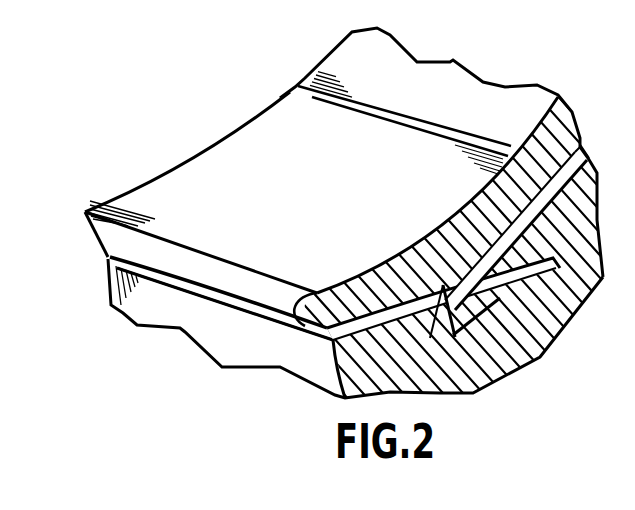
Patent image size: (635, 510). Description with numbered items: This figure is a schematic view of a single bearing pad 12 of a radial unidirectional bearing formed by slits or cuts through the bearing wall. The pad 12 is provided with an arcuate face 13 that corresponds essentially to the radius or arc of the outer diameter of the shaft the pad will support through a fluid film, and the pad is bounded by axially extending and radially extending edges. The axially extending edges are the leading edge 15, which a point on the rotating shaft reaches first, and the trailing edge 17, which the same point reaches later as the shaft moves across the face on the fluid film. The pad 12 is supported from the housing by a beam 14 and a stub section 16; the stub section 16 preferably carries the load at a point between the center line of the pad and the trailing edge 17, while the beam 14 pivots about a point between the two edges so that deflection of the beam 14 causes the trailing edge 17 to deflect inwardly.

The bearing pad 12 is at (522, 193).
The arcuate face 13 is at (268, 143).
The beam 14 is at (558, 322).
The leading edge 15 is at (190, 263).
The stub section 16 is at (455, 297).
The trailing edge 17 is at (371, 112).